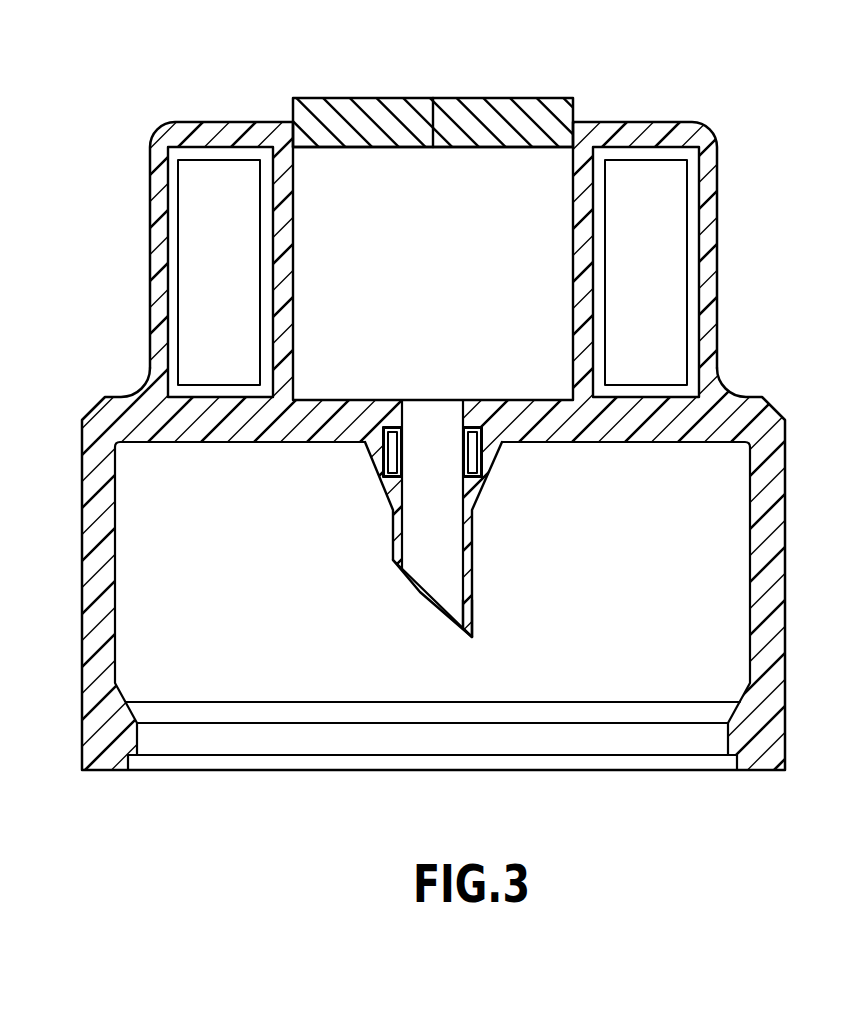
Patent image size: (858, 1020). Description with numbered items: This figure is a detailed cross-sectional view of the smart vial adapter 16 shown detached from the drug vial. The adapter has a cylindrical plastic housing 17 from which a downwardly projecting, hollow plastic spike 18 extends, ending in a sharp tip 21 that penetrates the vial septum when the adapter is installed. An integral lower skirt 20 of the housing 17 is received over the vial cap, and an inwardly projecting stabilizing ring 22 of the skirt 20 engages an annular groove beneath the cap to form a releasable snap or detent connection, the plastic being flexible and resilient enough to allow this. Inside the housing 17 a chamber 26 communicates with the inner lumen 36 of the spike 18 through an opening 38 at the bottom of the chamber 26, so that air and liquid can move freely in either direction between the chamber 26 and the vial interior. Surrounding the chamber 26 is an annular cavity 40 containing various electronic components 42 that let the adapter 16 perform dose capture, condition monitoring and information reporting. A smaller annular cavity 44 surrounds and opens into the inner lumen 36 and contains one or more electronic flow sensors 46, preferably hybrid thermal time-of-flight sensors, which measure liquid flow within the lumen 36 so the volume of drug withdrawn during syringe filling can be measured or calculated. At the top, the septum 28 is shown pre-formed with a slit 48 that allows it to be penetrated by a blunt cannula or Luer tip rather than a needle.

The smart vial adapter 16 is at (762, 298).
The housing 17 is at (150, 316).
The spike 18 is at (473, 527).
The lower skirt 20 is at (82, 625).
The sharp tip 21 is at (473, 618).
The stabilizing ring 22 is at (258, 740).
The chamber 26 is at (447, 263).
The septum 28 is at (363, 98).
The inner lumen 36 is at (437, 587).
The opening 38 is at (428, 400).
The annular cavity 40 is at (222, 152).
The electronic components 42 is at (203, 227).
The smaller annular cavity 44 is at (387, 468).
The electronic flow sensors 46 is at (476, 462).
The slit 48 is at (436, 108).